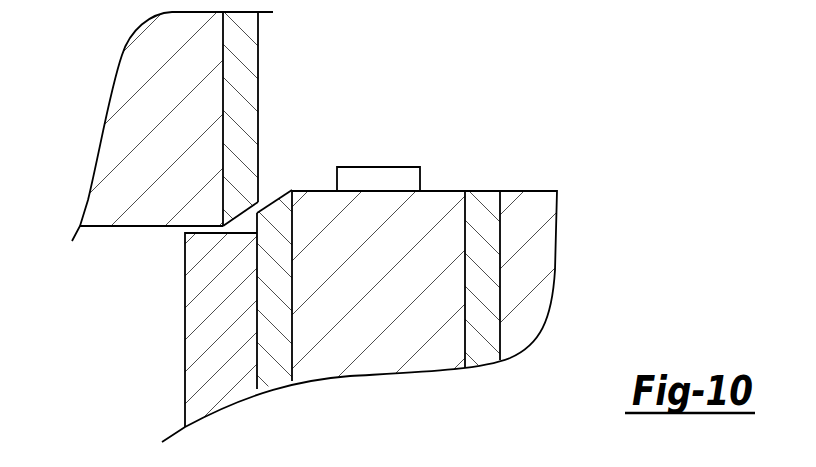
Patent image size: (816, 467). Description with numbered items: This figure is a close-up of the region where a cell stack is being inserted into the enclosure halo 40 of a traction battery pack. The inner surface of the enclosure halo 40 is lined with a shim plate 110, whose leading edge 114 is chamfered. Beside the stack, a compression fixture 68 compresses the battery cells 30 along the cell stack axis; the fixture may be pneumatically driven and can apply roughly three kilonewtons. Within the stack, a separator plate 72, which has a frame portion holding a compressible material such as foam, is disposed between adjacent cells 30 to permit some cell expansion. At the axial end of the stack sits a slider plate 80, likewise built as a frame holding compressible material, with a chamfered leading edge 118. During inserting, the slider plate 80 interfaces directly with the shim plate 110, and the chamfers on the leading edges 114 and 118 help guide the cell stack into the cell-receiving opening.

The battery cell 30 is at (418, 352).
The enclosure halo 40 is at (146, 130).
The compression fixture 68 is at (183, 332).
The separator plate 72 is at (483, 197).
The slider plate 80 is at (275, 365).
The shim plate 110 is at (258, 58).
The leading edge of shim plate 114 is at (233, 222).
The leading edge of slider plate 118 is at (281, 198).